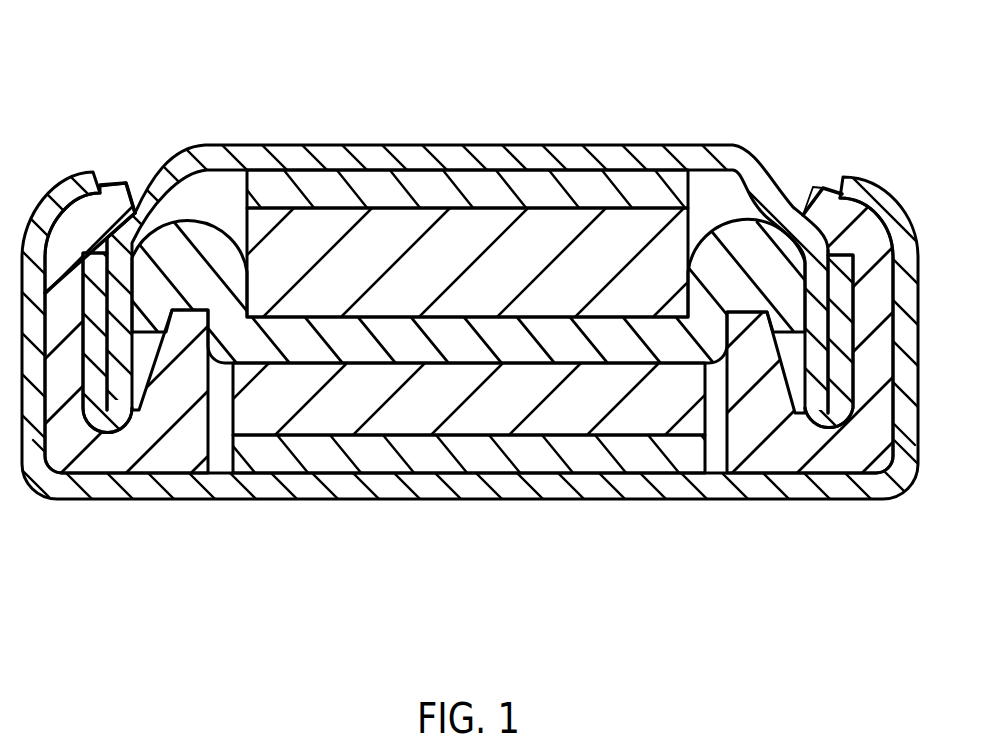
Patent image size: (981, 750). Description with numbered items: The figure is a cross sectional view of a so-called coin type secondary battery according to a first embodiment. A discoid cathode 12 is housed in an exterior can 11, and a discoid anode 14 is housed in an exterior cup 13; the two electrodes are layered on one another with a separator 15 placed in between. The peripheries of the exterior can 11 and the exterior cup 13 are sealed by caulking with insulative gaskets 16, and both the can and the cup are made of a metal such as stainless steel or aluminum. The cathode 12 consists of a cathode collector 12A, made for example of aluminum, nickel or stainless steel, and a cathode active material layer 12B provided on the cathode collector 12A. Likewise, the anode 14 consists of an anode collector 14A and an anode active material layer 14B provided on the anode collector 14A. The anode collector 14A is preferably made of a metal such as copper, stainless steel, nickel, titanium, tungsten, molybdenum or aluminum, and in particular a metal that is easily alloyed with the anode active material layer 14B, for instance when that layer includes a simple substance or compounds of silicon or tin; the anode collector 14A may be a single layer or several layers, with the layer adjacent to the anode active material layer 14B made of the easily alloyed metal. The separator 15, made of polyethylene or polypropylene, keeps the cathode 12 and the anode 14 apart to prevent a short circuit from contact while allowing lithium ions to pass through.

The exterior can 11 is at (313, 487).
The cathode 12 is at (643, 590).
The cathode collector 12A is at (471, 487).
The cathode active material layer 12B is at (613, 478).
The exterior cup 13 is at (287, 158).
The anode 14 is at (630, 72).
The anode collector 14A is at (458, 192).
The anode active material layer 14B is at (597, 242).
The separator 15 is at (752, 255).
The insulative gasket 16 is at (153, 460).